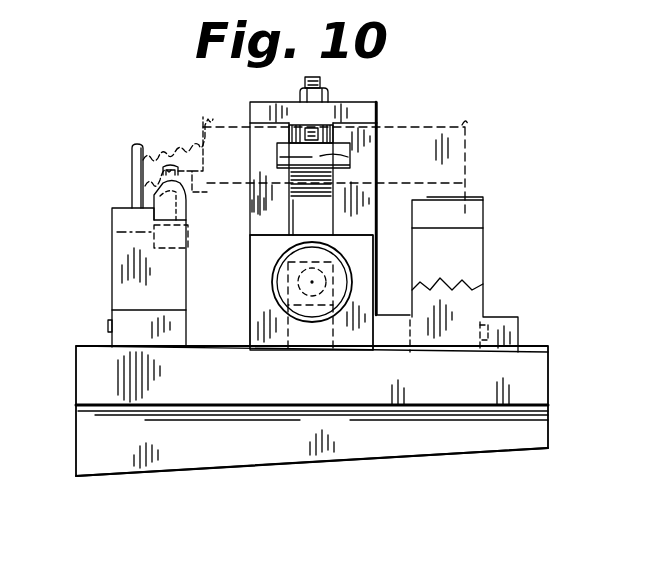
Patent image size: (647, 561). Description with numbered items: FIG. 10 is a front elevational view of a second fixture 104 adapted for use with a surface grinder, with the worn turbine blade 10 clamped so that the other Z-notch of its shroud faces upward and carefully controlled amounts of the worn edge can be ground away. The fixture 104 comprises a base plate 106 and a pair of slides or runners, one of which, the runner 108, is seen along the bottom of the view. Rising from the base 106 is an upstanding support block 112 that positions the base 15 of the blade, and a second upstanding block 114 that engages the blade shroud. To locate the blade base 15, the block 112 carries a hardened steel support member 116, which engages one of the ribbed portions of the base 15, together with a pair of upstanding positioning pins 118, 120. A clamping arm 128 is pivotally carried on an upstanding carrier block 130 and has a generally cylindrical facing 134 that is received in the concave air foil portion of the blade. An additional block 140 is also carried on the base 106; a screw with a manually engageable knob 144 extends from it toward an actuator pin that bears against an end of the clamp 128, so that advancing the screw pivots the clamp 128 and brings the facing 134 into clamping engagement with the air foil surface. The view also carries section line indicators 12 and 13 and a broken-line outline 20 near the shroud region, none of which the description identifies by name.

The turbine blade 10 is at (423, 127).
The section line 12- 12 is at (65, 135).
The section line 13- 13 is at (313, 60).
The base of the turbine blade 15 is at (175, 140).
The blade outline (phantom) 20 is at (468, 126).
The second fixture 104 is at (447, 463).
The base plate 106 is at (102, 365).
The slide or runner 108 is at (212, 460).
The upstanding support block 112 is at (112, 263).
The second upstanding block 114 is at (470, 262).
The hardened steel support member 116 is at (176, 211).
The upstanding positioning pin 118 is at (131, 160).
The upstanding positioning pin 120 is at (163, 171).
The clamping arm 128 is at (307, 213).
The upstanding carrier block 130 is at (373, 214).
The facing 134 is at (348, 160).
The additional block 140 is at (254, 252).
The manually engageable knob 144 is at (280, 279).